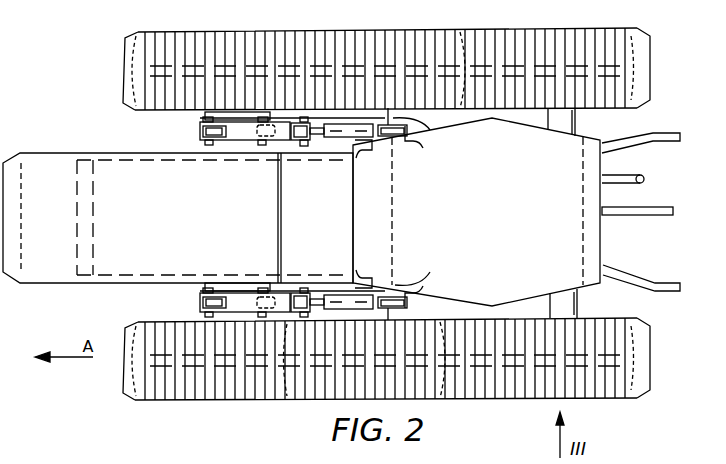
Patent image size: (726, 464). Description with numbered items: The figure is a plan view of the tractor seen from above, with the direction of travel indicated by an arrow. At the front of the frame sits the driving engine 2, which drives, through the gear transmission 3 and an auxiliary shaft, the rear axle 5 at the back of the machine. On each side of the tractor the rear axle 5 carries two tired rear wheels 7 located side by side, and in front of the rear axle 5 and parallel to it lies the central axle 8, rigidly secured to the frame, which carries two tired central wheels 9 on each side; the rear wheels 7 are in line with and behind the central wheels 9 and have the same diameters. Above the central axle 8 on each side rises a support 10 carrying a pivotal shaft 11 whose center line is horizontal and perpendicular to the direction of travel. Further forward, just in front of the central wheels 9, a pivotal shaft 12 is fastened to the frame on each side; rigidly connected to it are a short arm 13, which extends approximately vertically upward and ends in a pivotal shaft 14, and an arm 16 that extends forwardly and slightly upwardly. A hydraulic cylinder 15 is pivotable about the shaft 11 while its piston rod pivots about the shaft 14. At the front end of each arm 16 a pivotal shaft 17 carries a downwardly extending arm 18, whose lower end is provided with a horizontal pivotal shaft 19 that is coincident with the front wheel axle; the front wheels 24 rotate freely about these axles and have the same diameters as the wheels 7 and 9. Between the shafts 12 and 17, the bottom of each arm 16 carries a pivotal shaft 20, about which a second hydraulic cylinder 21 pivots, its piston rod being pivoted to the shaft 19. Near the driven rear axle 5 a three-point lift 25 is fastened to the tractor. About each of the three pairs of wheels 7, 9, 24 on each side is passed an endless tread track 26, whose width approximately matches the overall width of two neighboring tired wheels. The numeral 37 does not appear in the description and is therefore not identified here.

The driving engine 2 is at (78, 208).
The gear transmission 3 is at (285, 226).
The rear axle 5 is at (578, 126).
The rear wheels 7 is at (640, 76).
The central axle 8 is at (425, 124).
The central wheels 9 is at (420, 40).
The support 10 is at (423, 148).
The pivotal shaft 11 is at (388, 118).
The pivotal shaft 12 is at (302, 150).
The short arm 13 is at (316, 145).
The pivotal shaft 14 is at (305, 112).
The hydraulic cylinder 15 is at (360, 145).
The arm 16 is at (295, 120).
The pivotal shaft 17 is at (208, 147).
The arm 18 is at (200, 133).
The pivotal shaft 19 is at (235, 217).
The pivotal shaft 20 is at (262, 146).
The hydraulic cylinder 21 is at (245, 142).
The front wheels 24 is at (135, 93).
The three-point lift 25 is at (641, 278).
The endless tread track 26 is at (306, 30).
The track rails 37 is at (386, 200).